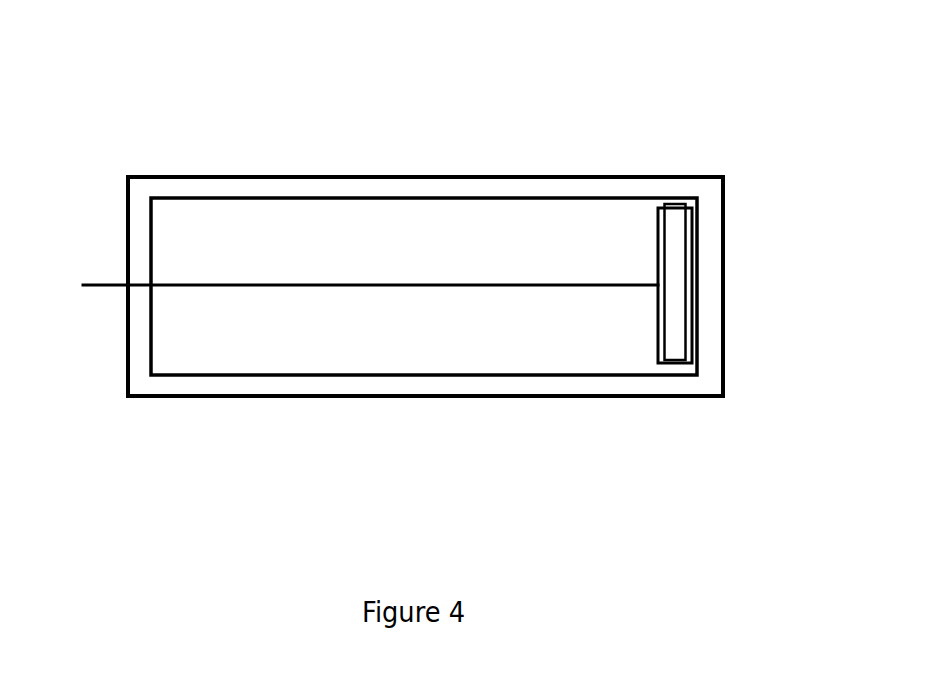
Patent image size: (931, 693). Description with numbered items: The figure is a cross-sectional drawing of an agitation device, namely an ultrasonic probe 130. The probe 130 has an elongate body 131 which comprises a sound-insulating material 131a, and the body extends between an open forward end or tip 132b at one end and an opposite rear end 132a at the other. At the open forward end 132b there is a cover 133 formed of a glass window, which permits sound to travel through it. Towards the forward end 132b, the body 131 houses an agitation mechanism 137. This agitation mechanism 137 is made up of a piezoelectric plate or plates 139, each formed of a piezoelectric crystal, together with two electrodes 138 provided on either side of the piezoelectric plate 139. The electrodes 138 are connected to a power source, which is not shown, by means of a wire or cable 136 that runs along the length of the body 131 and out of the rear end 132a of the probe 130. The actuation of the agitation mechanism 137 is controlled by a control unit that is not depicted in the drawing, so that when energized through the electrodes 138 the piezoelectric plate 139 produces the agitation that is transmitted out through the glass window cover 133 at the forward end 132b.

The ultrasonic probe 130 is at (347, 135).
The elongate body 131 is at (218, 188).
The sound-insulating material 131a is at (223, 337).
The rear end 132a is at (120, 196).
The open forward end 132b is at (716, 164).
The cover 133 is at (708, 362).
The wire or cable 136 is at (353, 287).
The agitation mechanism 137 is at (646, 251).
The electrodes 138 is at (692, 209).
The piezoelectric plate 139 is at (675, 360).